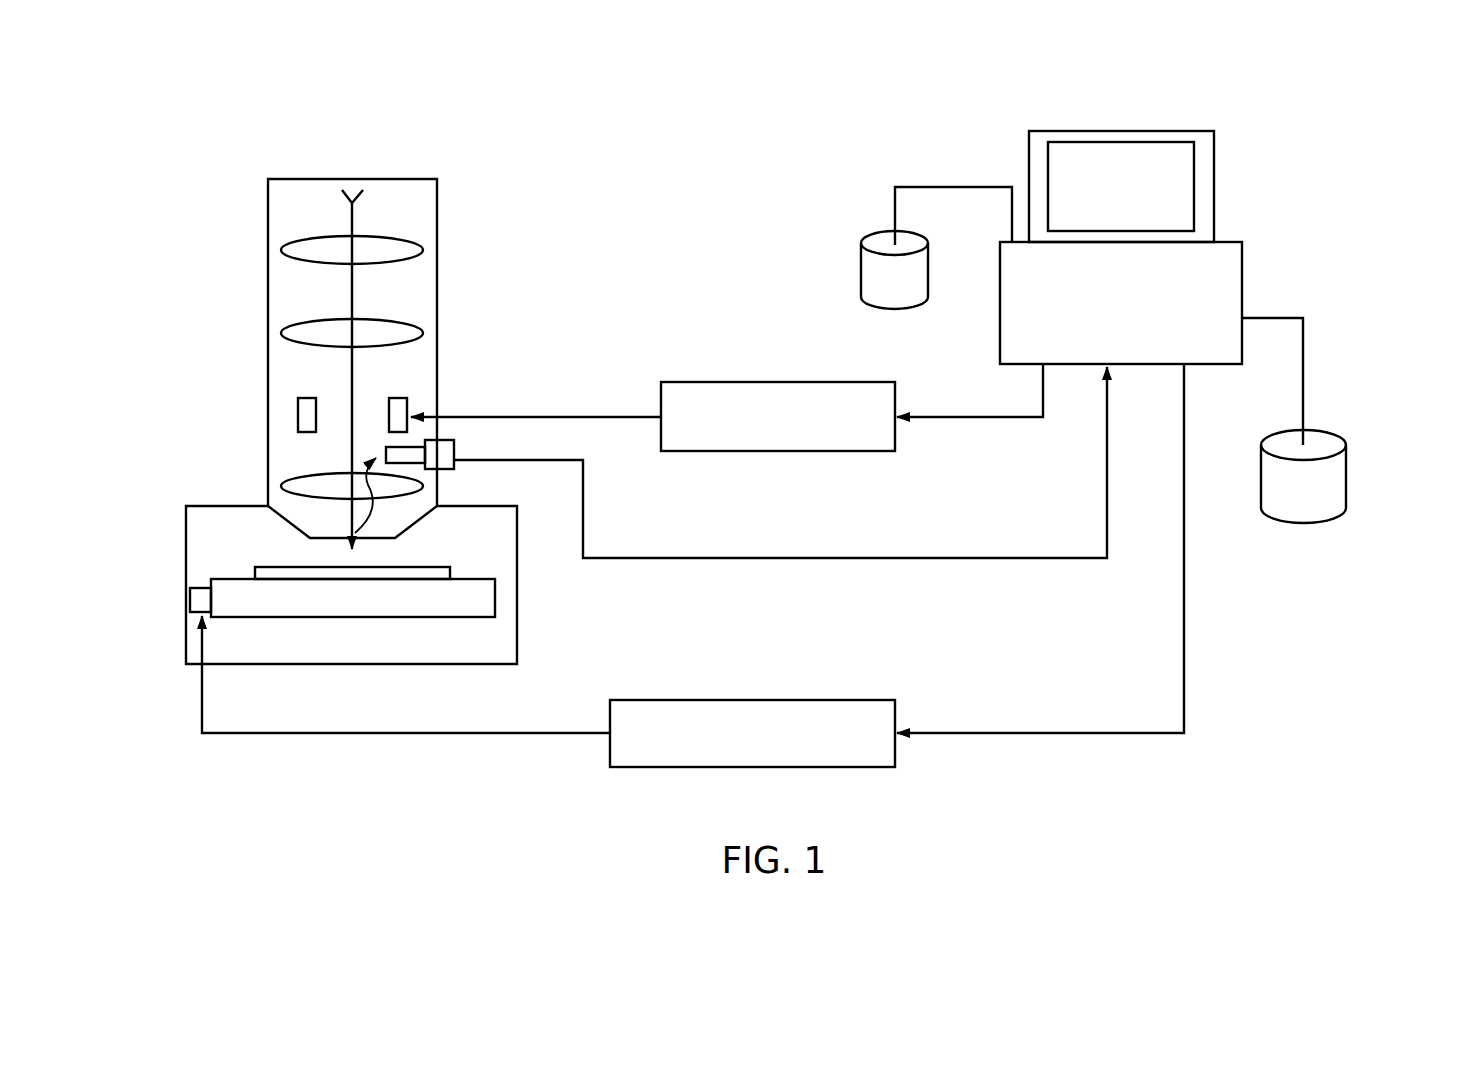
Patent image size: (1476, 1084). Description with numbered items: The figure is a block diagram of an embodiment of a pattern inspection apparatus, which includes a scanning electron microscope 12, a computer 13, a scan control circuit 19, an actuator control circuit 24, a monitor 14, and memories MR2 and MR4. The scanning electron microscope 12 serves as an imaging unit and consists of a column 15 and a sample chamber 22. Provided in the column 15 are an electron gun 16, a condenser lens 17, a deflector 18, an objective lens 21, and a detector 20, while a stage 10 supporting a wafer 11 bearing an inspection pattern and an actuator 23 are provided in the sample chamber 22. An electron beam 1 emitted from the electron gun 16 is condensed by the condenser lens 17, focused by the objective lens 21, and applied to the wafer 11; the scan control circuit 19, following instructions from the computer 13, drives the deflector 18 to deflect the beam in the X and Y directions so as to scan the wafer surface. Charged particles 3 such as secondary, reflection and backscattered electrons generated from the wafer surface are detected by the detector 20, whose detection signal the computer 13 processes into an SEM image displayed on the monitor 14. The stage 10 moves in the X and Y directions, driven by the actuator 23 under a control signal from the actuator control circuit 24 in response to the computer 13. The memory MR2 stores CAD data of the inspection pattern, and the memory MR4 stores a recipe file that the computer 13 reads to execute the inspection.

The electron beam 1 is at (353, 222).
The secondary electrons 3 is at (368, 523).
The stage 10 is at (495, 598).
The wafer 11 is at (430, 565).
The scanning electron microscope 12 is at (258, 180).
The computer 13 is at (1228, 277).
The monitor 14 is at (1183, 181).
The column 15 is at (437, 189).
The electron gun 16 is at (356, 186).
The condenser lens 17 is at (403, 337).
The deflector 18 is at (400, 402).
The scan control circuit 19 is at (895, 390).
The detector 20 is at (454, 447).
The objective lens 21 is at (423, 483).
The sample chamber 22 is at (186, 520).
The actuator 23 is at (196, 598).
The actuator control circuit 24 is at (895, 705).
The memory MR2 is at (860, 270).
The memory MR4 is at (1346, 478).